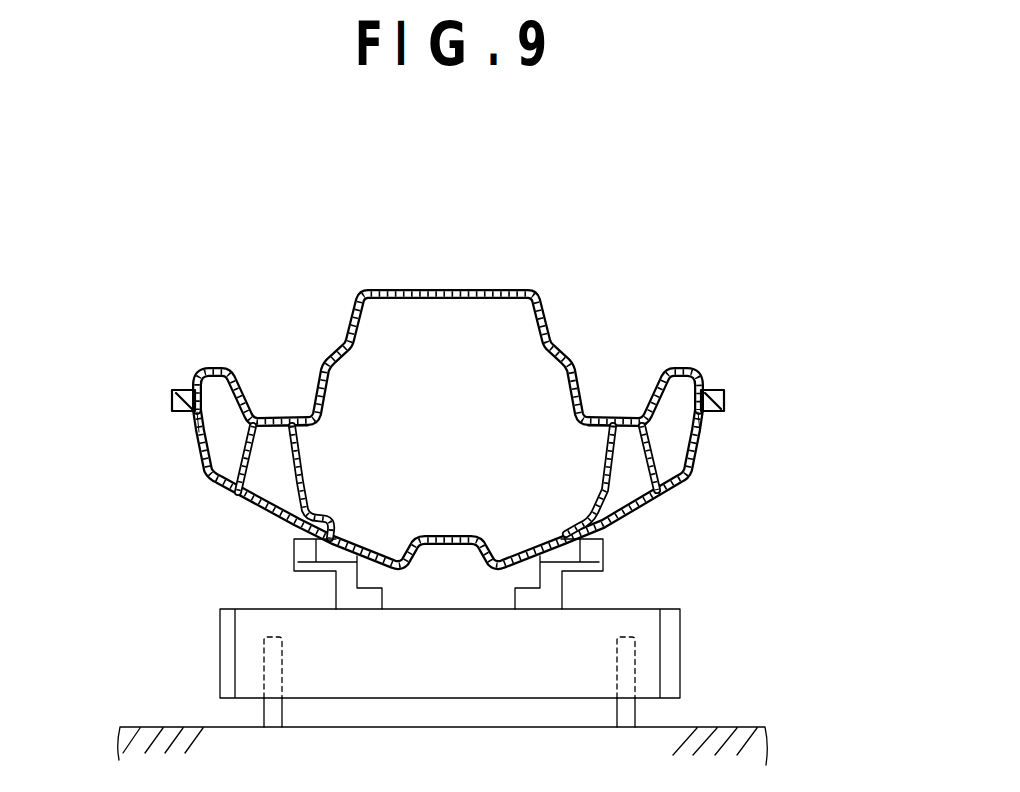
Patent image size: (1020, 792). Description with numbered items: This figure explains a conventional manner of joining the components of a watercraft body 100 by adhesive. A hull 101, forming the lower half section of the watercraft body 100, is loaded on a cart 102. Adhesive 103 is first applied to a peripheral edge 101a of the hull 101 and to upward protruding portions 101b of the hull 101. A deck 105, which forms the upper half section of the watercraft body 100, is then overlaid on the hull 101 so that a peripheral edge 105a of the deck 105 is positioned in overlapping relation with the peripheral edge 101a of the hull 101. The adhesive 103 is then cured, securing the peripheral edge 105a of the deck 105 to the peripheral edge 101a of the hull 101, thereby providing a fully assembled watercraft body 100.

The wheel assembly 100 is at (612, 250).
The hull 101 is at (697, 457).
The peripheral edge of the hull 101a is at (720, 408).
The upward protruding portions of the hull 101b is at (613, 430).
The cart 102 is at (672, 650).
The adhesive 103 is at (277, 420).
The deck 105 is at (450, 290).
The peripheral edge of the deck 105a is at (178, 396).